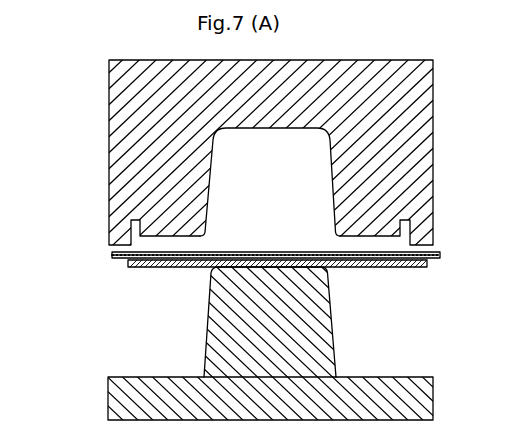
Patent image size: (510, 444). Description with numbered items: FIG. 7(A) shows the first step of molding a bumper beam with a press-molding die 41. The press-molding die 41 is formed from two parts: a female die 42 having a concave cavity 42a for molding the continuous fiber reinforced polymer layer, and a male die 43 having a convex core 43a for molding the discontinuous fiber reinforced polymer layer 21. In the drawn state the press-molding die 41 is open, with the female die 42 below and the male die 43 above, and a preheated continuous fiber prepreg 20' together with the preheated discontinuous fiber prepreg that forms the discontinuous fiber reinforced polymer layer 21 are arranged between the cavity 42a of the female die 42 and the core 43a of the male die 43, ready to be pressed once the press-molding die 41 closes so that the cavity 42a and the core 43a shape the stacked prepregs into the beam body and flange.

The press-molding die 41 is at (261, 152).
The female die 42 is at (299, 152).
The concave cavity 42a is at (252, 128).
The continuous fiber prepreg 20' is at (276, 225).
The discontinuous fiber reinforced polymer layer 21 is at (203, 268).
The convex core 43a is at (333, 300).
The male die 43 is at (436, 395).